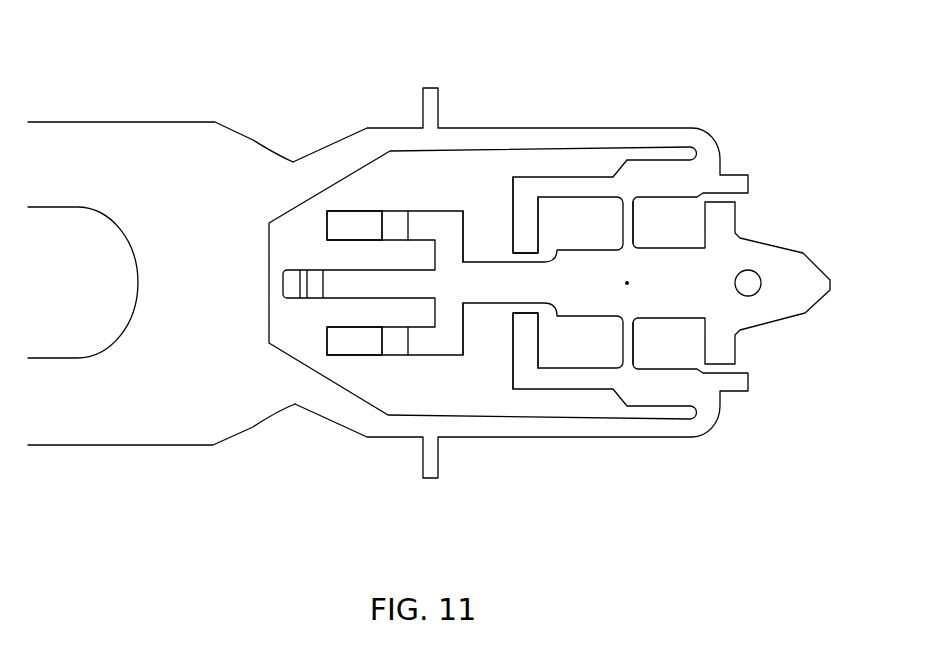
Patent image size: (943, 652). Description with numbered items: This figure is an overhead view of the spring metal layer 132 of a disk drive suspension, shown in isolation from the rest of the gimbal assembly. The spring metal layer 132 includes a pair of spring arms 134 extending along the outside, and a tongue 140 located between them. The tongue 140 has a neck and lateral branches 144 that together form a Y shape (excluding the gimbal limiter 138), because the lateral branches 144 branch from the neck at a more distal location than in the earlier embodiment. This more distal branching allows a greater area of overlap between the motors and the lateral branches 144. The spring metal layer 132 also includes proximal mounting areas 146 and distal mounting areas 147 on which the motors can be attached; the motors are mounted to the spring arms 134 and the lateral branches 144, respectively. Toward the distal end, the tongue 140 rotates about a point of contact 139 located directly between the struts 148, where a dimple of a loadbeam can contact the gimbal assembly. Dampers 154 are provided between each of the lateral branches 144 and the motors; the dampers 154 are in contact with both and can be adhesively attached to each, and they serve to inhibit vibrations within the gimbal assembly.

The spring metal layer 132 is at (592, 498).
The spring arms 134 is at (670, 130).
The gimbal limiter 138 is at (290, 285).
The point of contact 139 is at (627, 283).
The tongue 140 is at (785, 312).
The lateral branches 144 is at (453, 252).
The proximal mounting areas 146 is at (333, 222).
The distal mounting areas 147 is at (520, 217).
The struts 148 is at (628, 223).
The dampers 154 is at (393, 222).